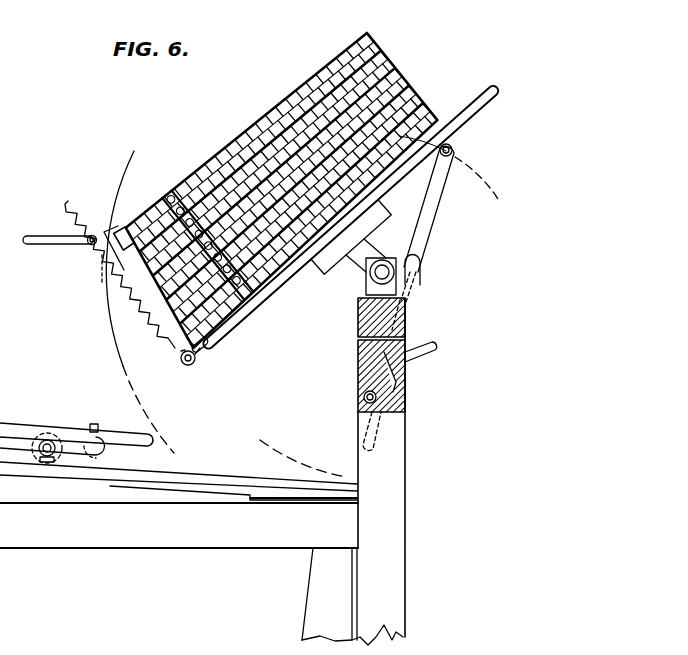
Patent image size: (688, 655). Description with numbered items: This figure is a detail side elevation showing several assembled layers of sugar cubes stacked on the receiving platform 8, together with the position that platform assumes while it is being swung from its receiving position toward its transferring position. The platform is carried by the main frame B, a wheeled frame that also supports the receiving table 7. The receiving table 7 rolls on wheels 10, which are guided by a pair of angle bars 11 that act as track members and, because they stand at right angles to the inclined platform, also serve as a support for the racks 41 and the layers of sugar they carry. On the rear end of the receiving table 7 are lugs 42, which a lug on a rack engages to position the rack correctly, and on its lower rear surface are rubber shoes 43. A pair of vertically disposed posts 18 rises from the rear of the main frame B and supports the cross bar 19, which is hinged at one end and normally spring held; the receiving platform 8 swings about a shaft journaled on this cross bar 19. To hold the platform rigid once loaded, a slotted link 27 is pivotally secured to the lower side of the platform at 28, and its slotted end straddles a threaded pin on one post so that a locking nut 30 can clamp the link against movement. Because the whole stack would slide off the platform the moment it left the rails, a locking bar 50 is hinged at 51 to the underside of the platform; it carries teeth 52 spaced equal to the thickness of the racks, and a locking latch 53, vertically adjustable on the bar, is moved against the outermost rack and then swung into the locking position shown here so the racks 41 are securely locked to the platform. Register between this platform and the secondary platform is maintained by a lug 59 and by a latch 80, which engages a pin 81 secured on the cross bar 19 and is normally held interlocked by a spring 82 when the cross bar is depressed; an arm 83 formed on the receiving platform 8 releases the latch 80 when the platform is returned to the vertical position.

The rack 41 is at (421, 117).
The receiving platform 8 is at (263, 281).
The pivot of the slotted link 28 is at (454, 152).
The slotted link 27 is at (424, 233).
The arm 83 is at (454, 301).
The cross bar 19 is at (449, 316).
The latch 80 is at (448, 330).
The pin 81 is at (344, 322).
The spring 82 is at (444, 398).
The locking nut 30 is at (448, 383).
The post 18 is at (381, 467).
The main frame B is at (201, 582).
The angle bar 11 is at (179, 482).
The receiving table 7 is at (36, 428).
The rubber shoe 43 is at (101, 450).
The lug 42 is at (99, 427).
The wheel 10 is at (44, 462).
The hinge of the locking bar 51 is at (180, 359).
The lug 59 is at (210, 347).
The locking latch 53 is at (90, 246).
The locking bar 50 is at (124, 279).
The teeth 52 is at (126, 293).